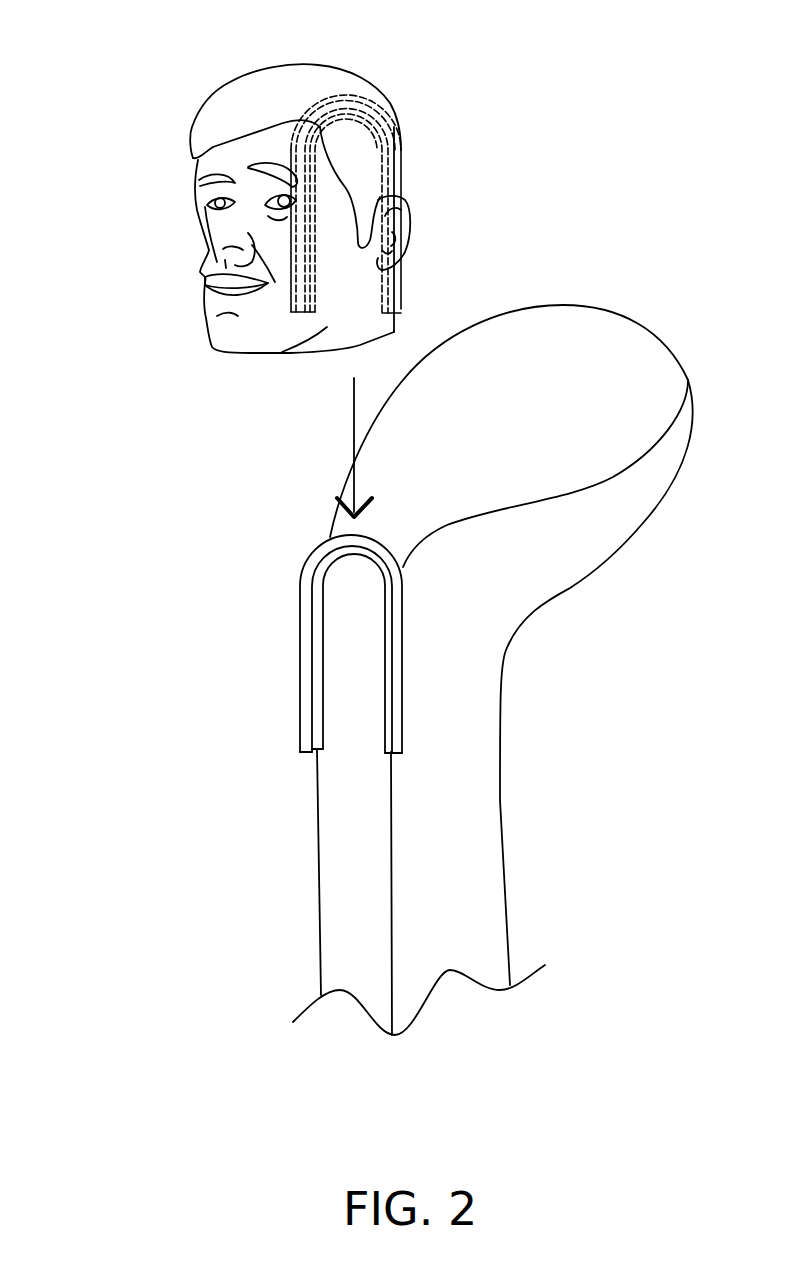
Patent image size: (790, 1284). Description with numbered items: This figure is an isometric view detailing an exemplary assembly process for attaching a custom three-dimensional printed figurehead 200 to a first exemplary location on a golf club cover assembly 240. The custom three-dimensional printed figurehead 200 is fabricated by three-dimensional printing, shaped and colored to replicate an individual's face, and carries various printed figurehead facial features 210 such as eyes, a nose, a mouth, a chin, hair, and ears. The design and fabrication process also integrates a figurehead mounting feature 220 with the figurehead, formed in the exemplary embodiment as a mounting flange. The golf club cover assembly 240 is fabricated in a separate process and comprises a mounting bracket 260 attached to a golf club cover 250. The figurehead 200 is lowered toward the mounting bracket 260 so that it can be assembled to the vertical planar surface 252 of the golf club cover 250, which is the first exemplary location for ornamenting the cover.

The custom three-dimensional printed figurehead 200 is at (145, 78).
The printed figurehead facial features 210 is at (208, 345).
The figurehead mounting feature 220 is at (405, 182).
The golf club cover assembly 240 is at (572, 700).
The golf club cover 250 is at (563, 600).
The vertical planar surface 252 is at (350, 775).
The mounting bracket 260 is at (300, 662).